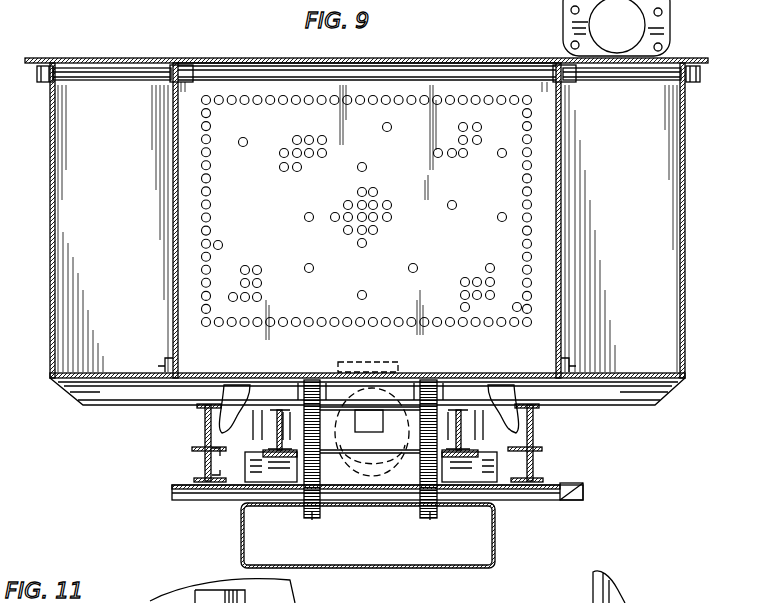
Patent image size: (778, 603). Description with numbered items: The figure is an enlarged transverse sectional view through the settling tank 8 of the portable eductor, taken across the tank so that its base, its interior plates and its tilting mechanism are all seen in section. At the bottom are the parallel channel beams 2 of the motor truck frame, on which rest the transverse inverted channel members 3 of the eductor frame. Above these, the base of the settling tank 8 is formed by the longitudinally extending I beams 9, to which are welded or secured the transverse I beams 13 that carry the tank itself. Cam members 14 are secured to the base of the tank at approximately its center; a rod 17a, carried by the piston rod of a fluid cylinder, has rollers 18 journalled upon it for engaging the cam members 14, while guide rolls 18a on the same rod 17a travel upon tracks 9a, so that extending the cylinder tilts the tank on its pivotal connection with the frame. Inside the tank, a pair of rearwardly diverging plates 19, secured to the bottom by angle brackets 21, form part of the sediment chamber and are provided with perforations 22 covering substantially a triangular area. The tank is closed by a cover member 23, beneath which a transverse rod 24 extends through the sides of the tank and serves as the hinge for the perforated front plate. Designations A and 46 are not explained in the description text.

In FIG. 9, the channel beams 2 is at (241, 526).
In FIG. 9, the transverse inverted channel members 3 is at (558, 495).
In FIG. 9, the settling tank 8 is at (490, 90).
In FIG. 9, the I beams 9 is at (207, 427).
In FIG. 9, the tracks 9a is at (283, 452).
In FIG. 9, the transverse I beams 13 is at (608, 392).
In FIG. 9, the cam members 14 is at (313, 520).
In FIG. 9, the rod 17a is at (380, 440).
In FIG. 9, the rollers 18 is at (338, 440).
In FIG. 9, the guide rolls 18a is at (297, 400).
In FIG. 9, the rearwardly diverging plates 19 is at (173, 302).
In FIG. 9, the angle brackets 21 is at (172, 372).
In FIG. 9, the perforations 22 is at (173, 113).
In FIG. 9, the cover member 23 is at (218, 61).
In FIG. 9, the transverse rod 24 is at (82, 78).
In FIG. 9, the rail A is at (215, 466).
In FIG. 11, the fragment 46 is at (578, 600).